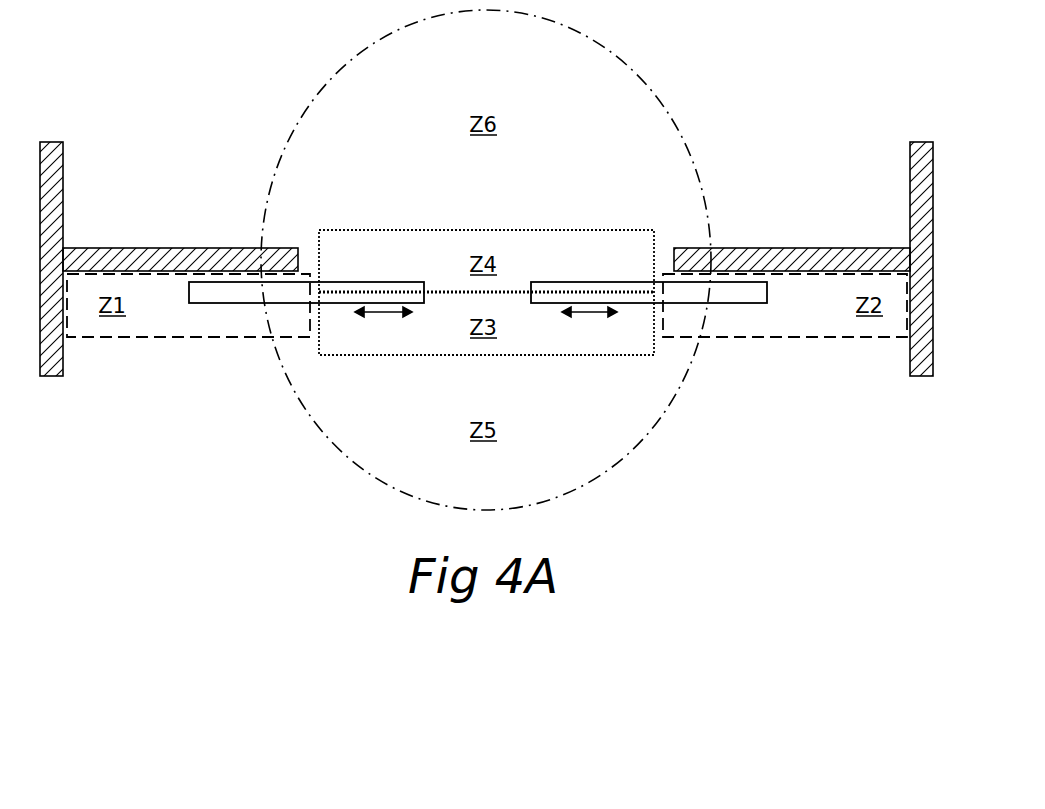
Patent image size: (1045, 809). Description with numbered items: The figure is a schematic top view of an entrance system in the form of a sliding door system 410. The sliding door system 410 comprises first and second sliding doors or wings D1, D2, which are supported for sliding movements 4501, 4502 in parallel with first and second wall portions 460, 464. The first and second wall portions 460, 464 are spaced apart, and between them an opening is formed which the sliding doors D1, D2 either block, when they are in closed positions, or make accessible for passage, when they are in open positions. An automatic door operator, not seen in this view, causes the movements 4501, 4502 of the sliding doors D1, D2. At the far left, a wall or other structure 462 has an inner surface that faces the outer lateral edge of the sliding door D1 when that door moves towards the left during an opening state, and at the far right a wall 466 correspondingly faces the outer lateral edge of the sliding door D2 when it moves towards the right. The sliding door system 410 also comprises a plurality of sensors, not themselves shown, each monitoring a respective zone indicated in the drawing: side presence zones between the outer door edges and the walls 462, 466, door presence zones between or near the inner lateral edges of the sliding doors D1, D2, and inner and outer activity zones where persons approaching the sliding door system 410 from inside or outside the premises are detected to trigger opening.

The sliding door system 410 is at (183, 54).
The first wall portion 460 is at (145, 257).
The wall 462 is at (58, 228).
The second wall portion 464 is at (788, 257).
The wall 466 is at (927, 228).
The sliding movement 4501 is at (380, 317).
The sliding movement 4502 is at (595, 317).
The first sliding door D1 is at (237, 305).
The second sliding door D2 is at (740, 305).